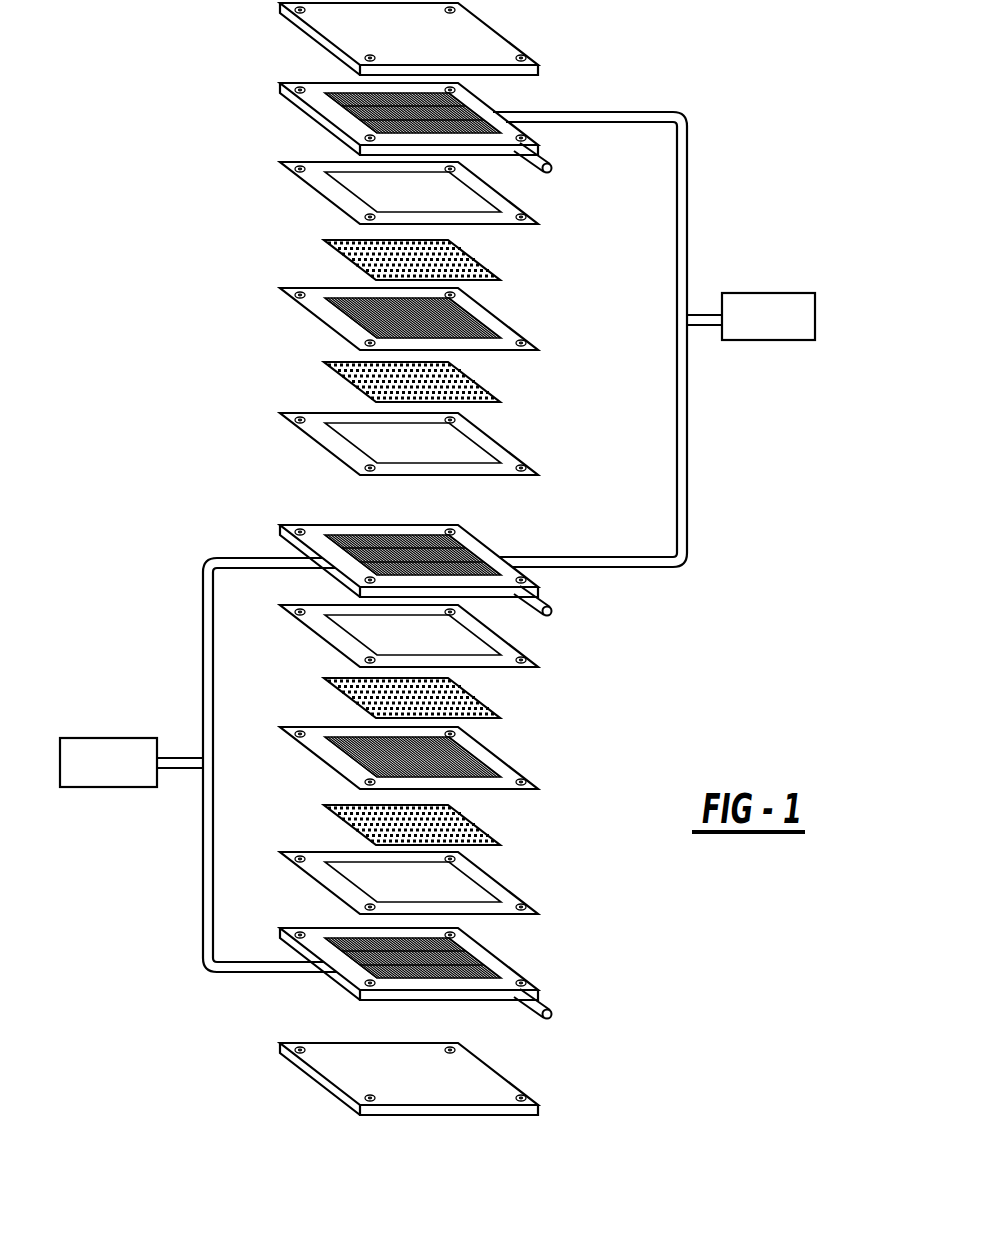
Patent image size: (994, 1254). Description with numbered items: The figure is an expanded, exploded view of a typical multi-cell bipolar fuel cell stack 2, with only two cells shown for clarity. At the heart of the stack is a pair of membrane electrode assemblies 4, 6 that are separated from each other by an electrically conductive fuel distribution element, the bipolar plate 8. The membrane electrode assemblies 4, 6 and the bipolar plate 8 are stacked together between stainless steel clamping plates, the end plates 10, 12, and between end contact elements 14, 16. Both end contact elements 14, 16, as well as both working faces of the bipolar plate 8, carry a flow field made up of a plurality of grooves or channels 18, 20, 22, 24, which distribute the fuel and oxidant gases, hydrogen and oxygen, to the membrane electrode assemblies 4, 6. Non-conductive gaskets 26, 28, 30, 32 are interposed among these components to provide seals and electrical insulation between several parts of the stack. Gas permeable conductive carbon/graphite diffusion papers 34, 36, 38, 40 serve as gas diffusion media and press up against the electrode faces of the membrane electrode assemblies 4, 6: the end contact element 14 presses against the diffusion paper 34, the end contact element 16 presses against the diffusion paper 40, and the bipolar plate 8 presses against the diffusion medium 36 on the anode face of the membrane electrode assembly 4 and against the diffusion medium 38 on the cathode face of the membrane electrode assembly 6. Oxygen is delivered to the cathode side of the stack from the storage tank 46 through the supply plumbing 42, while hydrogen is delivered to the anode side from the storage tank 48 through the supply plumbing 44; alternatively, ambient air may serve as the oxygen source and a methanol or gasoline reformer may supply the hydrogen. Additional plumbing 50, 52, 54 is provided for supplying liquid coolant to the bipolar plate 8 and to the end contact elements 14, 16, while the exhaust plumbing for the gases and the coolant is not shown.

The bipolar fuel cell stack 2 is at (712, 82).
The membrane electrode assembly 4 is at (316, 319).
The membrane electrode assembly 6 is at (509, 763).
The bipolar plate 8 is at (500, 541).
The end plate 10 is at (316, 46).
The end plate 12 is at (507, 1070).
The end contact element 14 is at (304, 121).
The end contact element 16 is at (517, 970).
The flow field channels 18 is at (497, 154).
The flow field channels 20 is at (345, 537).
The flow field channels 22 is at (497, 600).
The flow field channels 24 is at (470, 950).
The gasket 26 is at (322, 178).
The gasket 28 is at (325, 445).
The gasket 30 is at (500, 668).
The gasket 32 is at (510, 890).
The carbon/graphite diffusion paper 34 is at (347, 261).
The carbon/graphite diffusion paper 36 is at (347, 382).
The carbon/graphite diffusion paper 38 is at (485, 700).
The carbon/graphite diffusion paper 40 is at (503, 820).
The supply plumbing 42 is at (690, 455).
The supply plumbing 44 is at (202, 667).
The storage tank 46 is at (788, 293).
The storage tank 48 is at (110, 738).
The coolant plumbing 50 is at (550, 153).
The coolant plumbing 52 is at (555, 603).
The coolant plumbing 54 is at (542, 1007).